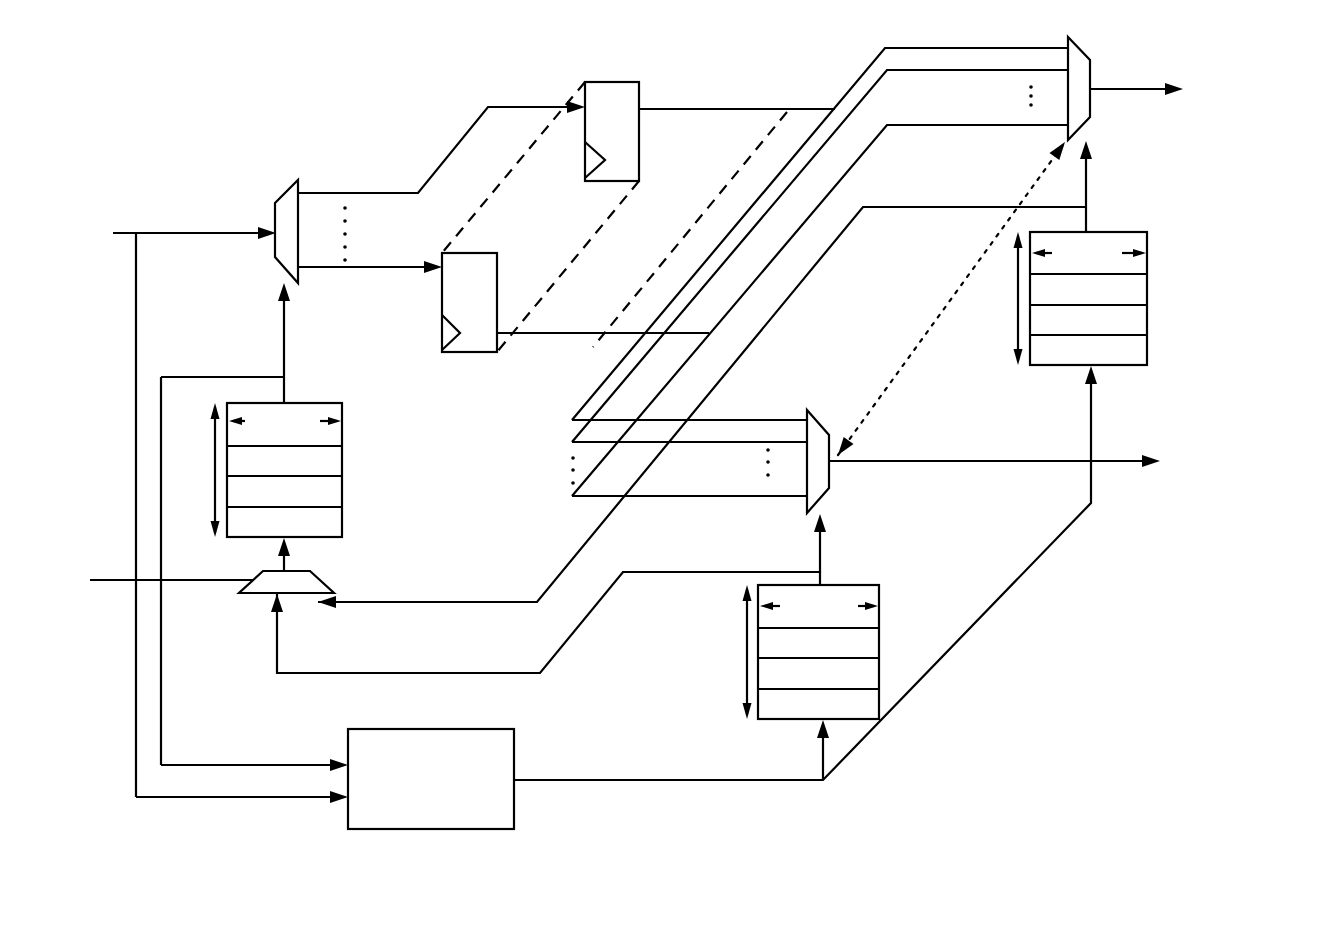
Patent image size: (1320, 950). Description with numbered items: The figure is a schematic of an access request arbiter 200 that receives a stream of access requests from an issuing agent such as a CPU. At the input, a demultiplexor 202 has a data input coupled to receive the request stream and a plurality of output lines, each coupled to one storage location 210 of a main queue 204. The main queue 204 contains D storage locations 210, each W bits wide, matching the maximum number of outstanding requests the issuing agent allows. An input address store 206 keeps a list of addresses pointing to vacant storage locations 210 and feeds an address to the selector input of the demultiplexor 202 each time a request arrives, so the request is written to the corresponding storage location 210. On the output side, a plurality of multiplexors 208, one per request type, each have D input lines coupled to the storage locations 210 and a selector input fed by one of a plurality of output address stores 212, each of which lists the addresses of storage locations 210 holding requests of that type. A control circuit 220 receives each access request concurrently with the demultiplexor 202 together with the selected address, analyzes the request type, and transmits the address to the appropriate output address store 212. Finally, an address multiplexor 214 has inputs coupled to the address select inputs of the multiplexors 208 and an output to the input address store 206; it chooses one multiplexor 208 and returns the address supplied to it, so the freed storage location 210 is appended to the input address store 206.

The access request arbiter 200 is at (967, 828).
The demultiplexor 202 is at (290, 182).
The main queue 204 is at (658, 48).
The input address store 206 is at (326, 403).
The multiplexor 208 is at (1085, 53).
The storage location 210 is at (639, 167).
The output address store 212 is at (1108, 232).
The address multiplexor 214 is at (327, 587).
The control circuit 220 is at (431, 779).